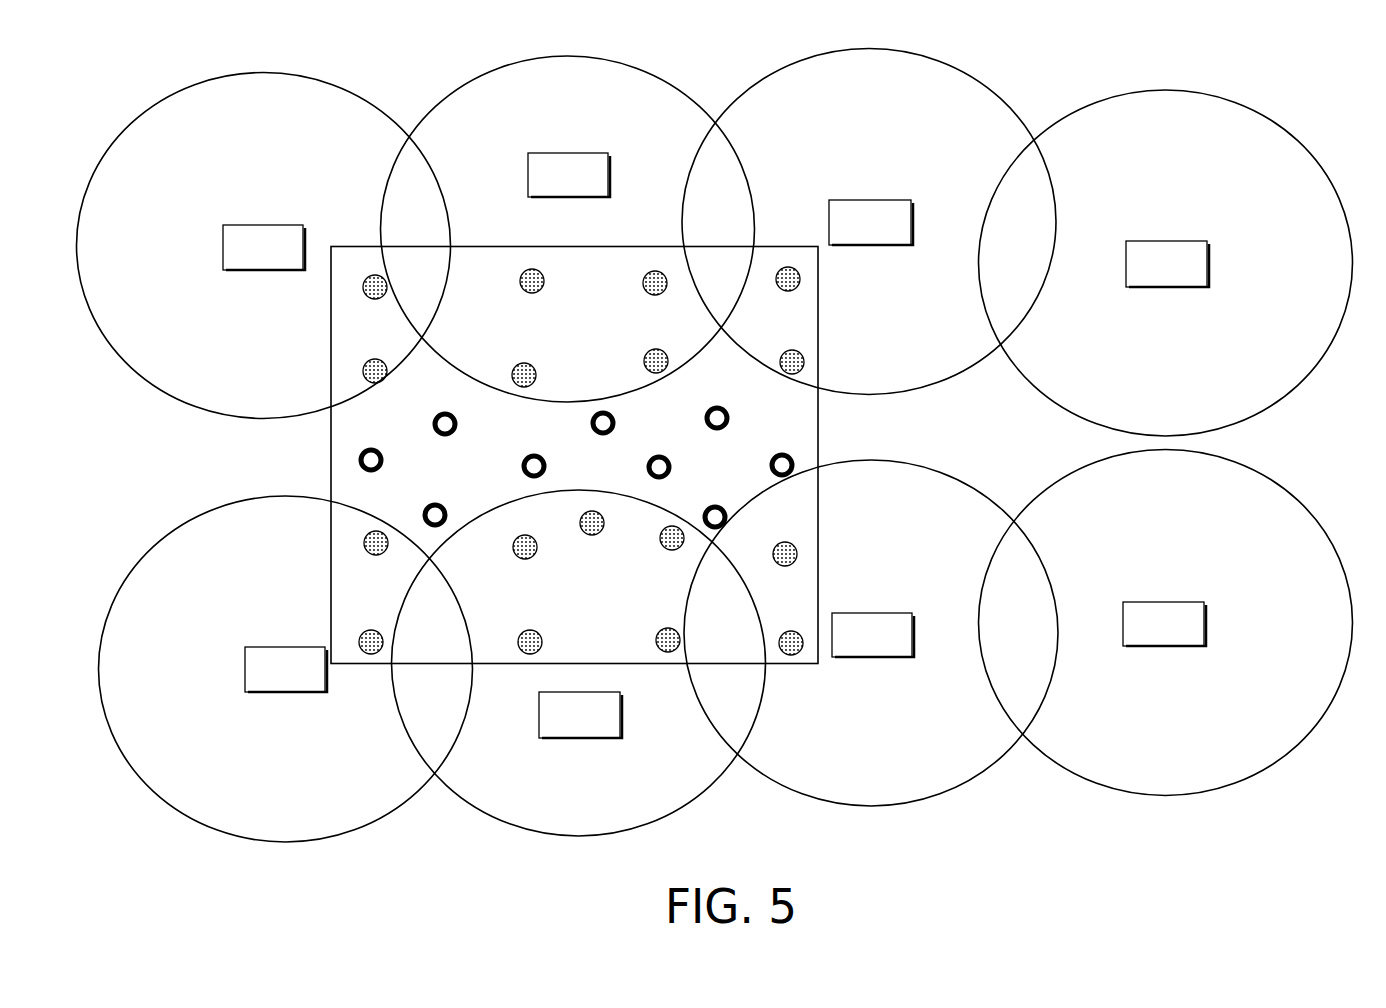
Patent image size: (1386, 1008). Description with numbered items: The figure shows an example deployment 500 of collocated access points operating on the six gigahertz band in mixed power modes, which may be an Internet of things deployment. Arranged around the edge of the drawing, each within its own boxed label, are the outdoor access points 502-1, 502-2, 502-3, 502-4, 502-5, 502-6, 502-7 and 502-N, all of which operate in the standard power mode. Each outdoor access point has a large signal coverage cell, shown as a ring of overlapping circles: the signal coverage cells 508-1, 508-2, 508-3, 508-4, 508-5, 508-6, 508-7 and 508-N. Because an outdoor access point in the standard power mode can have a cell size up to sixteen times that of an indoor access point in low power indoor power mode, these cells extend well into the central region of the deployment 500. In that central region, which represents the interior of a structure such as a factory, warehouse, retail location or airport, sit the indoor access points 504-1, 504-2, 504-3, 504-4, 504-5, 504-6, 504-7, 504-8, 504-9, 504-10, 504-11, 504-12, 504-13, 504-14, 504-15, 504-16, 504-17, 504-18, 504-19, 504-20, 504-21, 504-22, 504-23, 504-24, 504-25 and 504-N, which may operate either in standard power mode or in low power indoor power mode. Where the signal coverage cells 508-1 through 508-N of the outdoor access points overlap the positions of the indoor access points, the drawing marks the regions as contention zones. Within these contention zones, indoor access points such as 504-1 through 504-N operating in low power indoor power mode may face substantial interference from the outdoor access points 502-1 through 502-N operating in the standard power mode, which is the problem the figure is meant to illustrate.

The deployment 500 is at (1291, 52).
The outdoor access point 502-1 is at (293, 262).
The outdoor access point 502-2 is at (598, 188).
The outdoor access point 502-3 is at (900, 236).
The outdoor access point 502-4 is at (1197, 277).
The outdoor access point 502-5 is at (1195, 638).
The outdoor access point 502-6 is at (902, 650).
The outdoor access point 502-7 is at (610, 729).
The outdoor access point 502-N is at (318, 685).
The indoor access point 504-1 is at (363, 287).
The indoor access point 504-2 is at (520, 280).
The indoor access point 504-3 is at (643, 283).
The indoor access point 504-4 is at (776, 279).
The indoor access point 504-5 is at (363, 371).
The indoor access point 504-6 is at (512, 375).
The indoor access point 504-7 is at (688, 337).
The indoor access point 504-8 is at (780, 362).
The indoor access point 504-9 is at (433, 424).
The indoor access point 504-10 is at (591, 423).
The indoor access point 504-11 is at (705, 418).
The indoor access point 504-12 is at (359, 460).
The indoor access point 504-13 is at (522, 466).
The indoor access point 504-14 is at (647, 467).
The indoor access point 504-15 is at (770, 465).
The indoor access point 504-16 is at (423, 515).
The indoor access point 504-17 is at (580, 523).
The indoor access point 504-18 is at (703, 517).
The indoor access point 504-19 is at (364, 543).
The indoor access point 504-20 is at (513, 547).
The indoor access point 504-21 is at (660, 538).
The indoor access point 504-22 is at (773, 554).
The indoor access point 504-23 is at (359, 642).
The indoor access point 504-24 is at (518, 642).
The indoor access point 504-25 is at (656, 640).
The indoor access point 504-N is at (779, 643).
The signal coverage cell 508-1 is at (293, 155).
The signal coverage cell 508-2 is at (597, 112).
The signal coverage cell 508-3 is at (900, 128).
The signal coverage cell 508-4 is at (1197, 169).
The signal coverage cell 508-5 is at (1195, 741).
The signal coverage cell 508-6 is at (902, 753).
The signal coverage cell 508-7 is at (610, 780).
The signal coverage cell 508-N is at (318, 788).